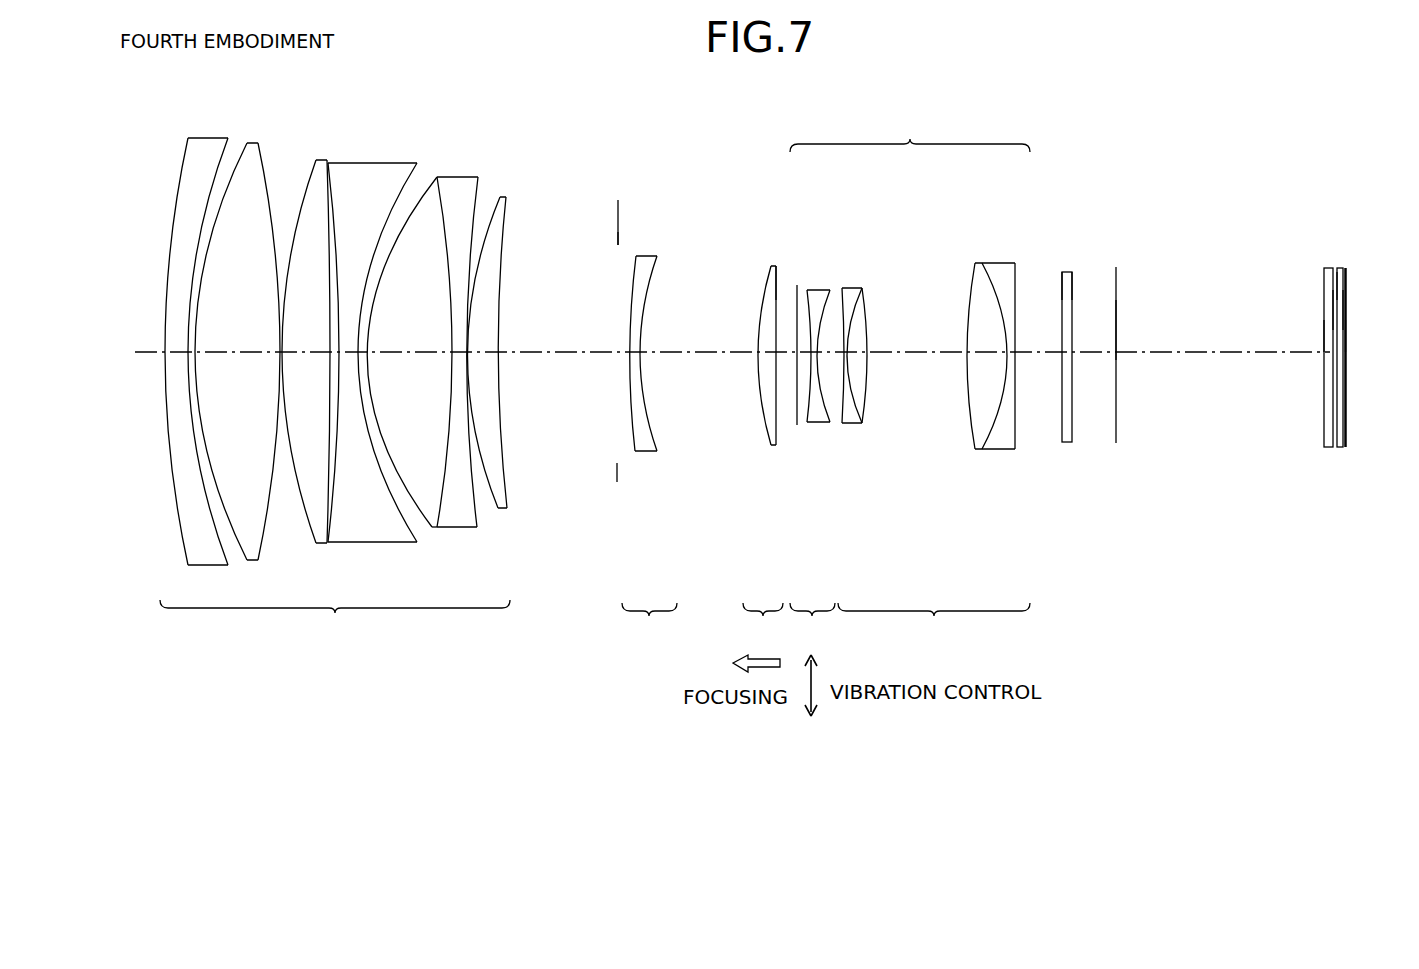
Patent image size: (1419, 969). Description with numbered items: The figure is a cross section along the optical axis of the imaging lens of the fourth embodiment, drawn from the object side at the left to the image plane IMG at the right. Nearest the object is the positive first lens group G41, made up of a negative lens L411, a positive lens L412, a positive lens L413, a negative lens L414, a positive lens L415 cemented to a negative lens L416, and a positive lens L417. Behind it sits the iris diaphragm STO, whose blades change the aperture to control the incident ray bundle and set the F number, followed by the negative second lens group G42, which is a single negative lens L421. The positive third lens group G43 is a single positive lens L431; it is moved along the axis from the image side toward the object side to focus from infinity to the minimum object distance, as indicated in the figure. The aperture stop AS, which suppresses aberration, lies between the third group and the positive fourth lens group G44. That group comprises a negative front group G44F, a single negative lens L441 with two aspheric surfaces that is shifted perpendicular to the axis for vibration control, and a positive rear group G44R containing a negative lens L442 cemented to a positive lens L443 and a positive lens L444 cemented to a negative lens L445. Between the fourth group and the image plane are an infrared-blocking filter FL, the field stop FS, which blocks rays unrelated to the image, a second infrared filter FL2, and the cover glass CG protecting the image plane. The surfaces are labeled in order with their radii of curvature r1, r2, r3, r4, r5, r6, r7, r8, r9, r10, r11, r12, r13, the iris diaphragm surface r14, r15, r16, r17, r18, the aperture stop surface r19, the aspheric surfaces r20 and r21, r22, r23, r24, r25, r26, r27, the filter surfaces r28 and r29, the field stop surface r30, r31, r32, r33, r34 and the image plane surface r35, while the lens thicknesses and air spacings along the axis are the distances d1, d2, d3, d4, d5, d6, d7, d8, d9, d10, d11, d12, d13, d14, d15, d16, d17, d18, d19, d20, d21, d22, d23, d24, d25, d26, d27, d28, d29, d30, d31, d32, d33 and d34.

The negative lens L411 is at (176, 327).
The positive lens L412 is at (250, 310).
The positive lens L413 is at (310, 317).
The negative lens L414 is at (372, 314).
The positive lens L415 is at (427, 305).
The negative lens L416 is at (485, 311).
The positive lens L417 is at (519, 347).
The negative lens L421 is at (639, 326).
The positive lens L431 is at (742, 331).
The negative lens L441 is at (810, 312).
The negative lens L442 is at (869, 320).
The positive lens L443 is at (888, 340).
The positive lens L444 is at (987, 336).
The negative lens L445 is at (1017, 333).
The radius of curvature r1 is at (172, 200).
The radius of curvature r2 is at (203, 152).
The radius of curvature r3 is at (243, 140).
The radius of curvature r4 is at (264, 152).
The radius of curvature r5 is at (302, 204).
The radius of curvature r6 is at (324, 174).
The radius of curvature r7 is at (338, 192).
The radius of curvature r8 is at (393, 222).
The radius of curvature r9 is at (431, 200).
The radius of curvature r10 is at (472, 196).
The radius of curvature r11 is at (486, 214).
The radius of curvature r12 is at (505, 243).
The radius of curvature r13 is at (506, 305).
The iris diaphragm surface r14 is at (617, 238).
The radius of curvature r15 is at (630, 321).
The radius of curvature r16 is at (646, 316).
The radius of curvature r17 is at (758, 338).
The radius of curvature r18 is at (771, 312).
The aperture stop surface r19 is at (776, 282).
The aspheric surface r20 is at (810, 302).
The aspheric surface r21 is at (818, 305).
The radius of curvature r22 is at (842, 300).
The radius of curvature r23 is at (853, 317).
The radius of curvature r24 is at (868, 344).
The radius of curvature r25 is at (967, 316).
The radius of curvature r26 is at (1002, 300).
The radius of curvature r27 is at (1017, 347).
The filter surface r28 is at (1061, 290).
The filter surface r29 is at (1074, 283).
The field stop surface r30 is at (1116, 332).
The filter surface r31 is at (1323, 332).
The filter surface r32 is at (1332, 308).
The cover glass surface r33 is at (1336, 281).
The cover glass surface r34 is at (1344, 300).
The image plane surface r35 is at (1347, 332).
The lens thickness d1 is at (176, 358).
The surface spacing d2 is at (187, 363).
The lens thickness d3 is at (240, 358).
The surface spacing d4 is at (281, 362).
The lens thickness d5 is at (305, 358).
The surface spacing d6 is at (313, 546).
The lens thickness d7 is at (351, 362).
The surface spacing d8 is at (363, 362).
The lens thickness d9 is at (410, 358).
The lens thickness d10 is at (460, 362).
The surface spacing d11 is at (481, 365).
The lens thickness d12 is at (499, 362).
The surface spacing d13 is at (569, 358).
The surface spacing d14 is at (633, 382).
The lens thickness d15 is at (641, 366).
The surface spacing d16 is at (712, 358).
The lens thickness d17 is at (766, 376).
The surface spacing d18 is at (776, 370).
The surface spacing d19 is at (798, 360).
The lens thickness d20 is at (815, 360).
The surface spacing d21 is at (836, 362).
The lens thickness d22 is at (846, 362).
The lens thickness d23 is at (856, 362).
The surface spacing d24 is at (922, 358).
The lens thickness d25 is at (983, 362).
The lens thickness d26 is at (1012, 360).
The surface spacing d27 is at (1042, 358).
The filter thickness d28 is at (1065, 446).
The surface spacing d29 is at (1093, 358).
The surface spacing d30 is at (1204, 358).
The filter thickness d31 is at (1325, 360).
The surface spacing d32 is at (1334, 363).
The cover glass thickness d33 is at (1342, 363).
The surface spacing d34 is at (1346, 360).
The iris diaphragm STO is at (618, 210).
The aperture stop AS is at (797, 285).
The filter FL is at (1067, 272).
The filter FL2 is at (1328, 270).
The field stop FS is at (1116, 267).
The cover glass CG is at (1340, 270).
The image plane IMG is at (1347, 276).
The first lens group G41 is at (335, 623).
The second lens group G42 is at (649, 624).
The third lens group G43 is at (763, 624).
The fourth lens group G44 is at (910, 133).
The front group G44F is at (812, 624).
The rear group G44R is at (934, 624).